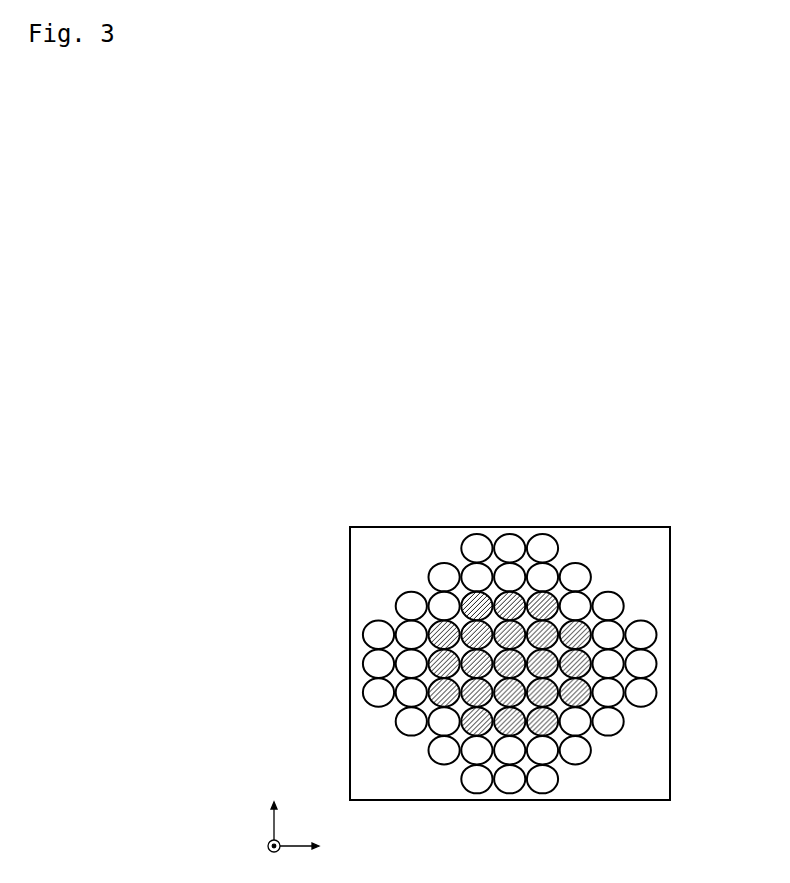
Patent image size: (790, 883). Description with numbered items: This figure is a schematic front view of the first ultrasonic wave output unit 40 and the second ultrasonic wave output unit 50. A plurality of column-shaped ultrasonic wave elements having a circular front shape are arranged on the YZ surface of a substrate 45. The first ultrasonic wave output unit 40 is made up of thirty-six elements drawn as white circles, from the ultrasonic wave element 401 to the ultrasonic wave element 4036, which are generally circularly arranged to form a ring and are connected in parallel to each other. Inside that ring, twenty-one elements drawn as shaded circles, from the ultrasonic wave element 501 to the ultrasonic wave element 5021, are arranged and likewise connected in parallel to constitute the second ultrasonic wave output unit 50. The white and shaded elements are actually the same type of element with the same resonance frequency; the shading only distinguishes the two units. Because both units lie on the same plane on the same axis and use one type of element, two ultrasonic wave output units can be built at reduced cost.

The first ultrasonic wave output unit 40 is at (540, 484).
The second ultrasonic wave output unit 50 is at (541, 481).
The substrate 45 is at (671, 568).
The ultrasonic wave element 401 is at (477, 544).
The ultrasonic wave element 4036 is at (538, 782).
The ultrasonic wave element 501 is at (472, 602).
The ultrasonic wave element 5021 is at (543, 720).